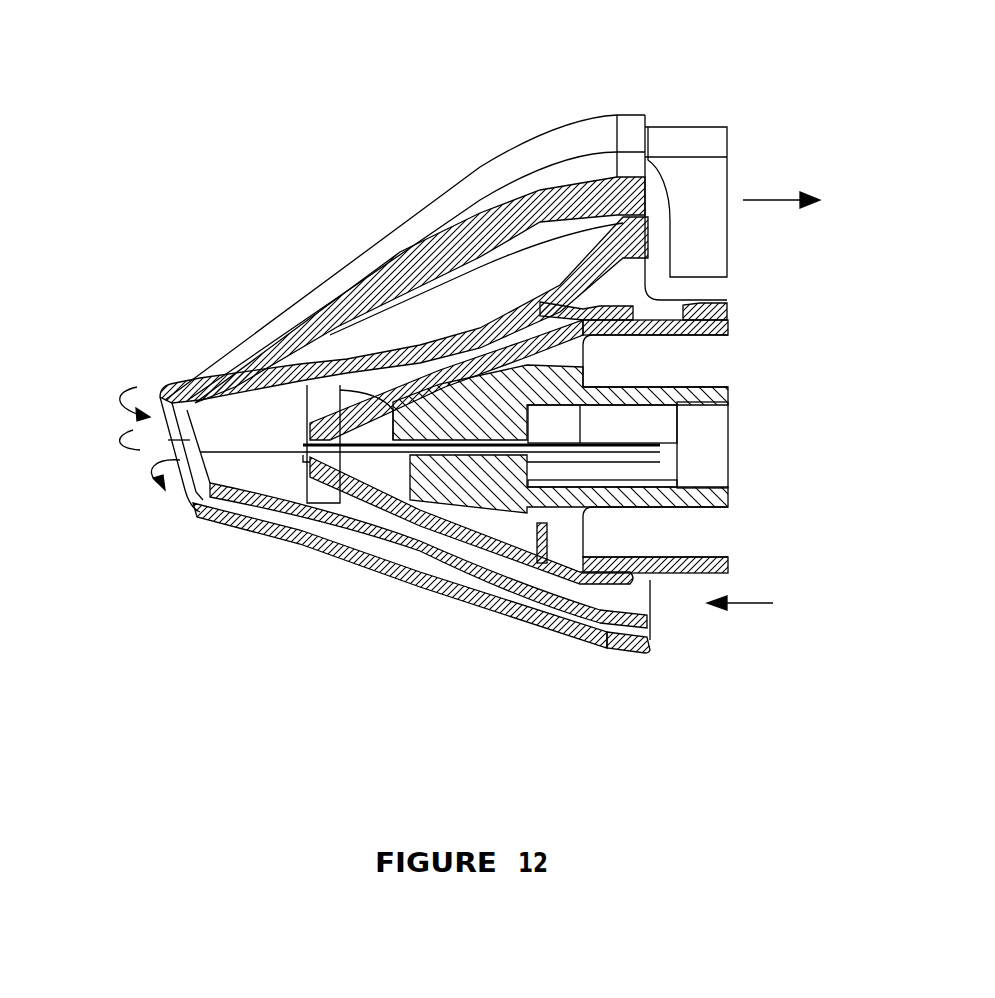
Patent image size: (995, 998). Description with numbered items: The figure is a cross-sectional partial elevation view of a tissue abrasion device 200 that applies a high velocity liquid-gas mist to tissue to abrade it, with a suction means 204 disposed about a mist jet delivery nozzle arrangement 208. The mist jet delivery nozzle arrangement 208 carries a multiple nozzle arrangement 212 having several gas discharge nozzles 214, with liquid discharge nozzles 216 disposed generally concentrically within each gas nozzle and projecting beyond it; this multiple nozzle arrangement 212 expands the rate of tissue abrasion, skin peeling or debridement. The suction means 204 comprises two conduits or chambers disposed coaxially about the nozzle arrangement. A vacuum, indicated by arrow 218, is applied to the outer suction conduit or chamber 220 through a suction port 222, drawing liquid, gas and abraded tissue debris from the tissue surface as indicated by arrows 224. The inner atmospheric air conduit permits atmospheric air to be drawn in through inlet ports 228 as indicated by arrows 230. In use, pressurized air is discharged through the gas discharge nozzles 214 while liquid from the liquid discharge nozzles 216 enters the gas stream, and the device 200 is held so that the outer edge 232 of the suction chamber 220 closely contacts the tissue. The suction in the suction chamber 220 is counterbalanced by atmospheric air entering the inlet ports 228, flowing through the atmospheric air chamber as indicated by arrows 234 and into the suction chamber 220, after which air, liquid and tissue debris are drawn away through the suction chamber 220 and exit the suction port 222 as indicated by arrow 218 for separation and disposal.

The device 200 is at (442, 371).
The suction means 204 is at (538, 112).
The mist jet delivery nozzle arrangement 208 is at (757, 348).
The multiple nozzle arrangement 212 is at (603, 647).
The gas discharge nozzles 214 is at (287, 483).
The liquid discharge nozzles 216 is at (367, 455).
The arrow 218 is at (788, 197).
The outer suction conduit or chamber 220 is at (497, 272).
The suction port 222 is at (690, 127).
The arrows 224 is at (155, 473).
The inlet ports 228 is at (650, 602).
The arrows 230 is at (753, 603).
The outer edge 232 is at (183, 500).
The arrows 234 is at (298, 402).